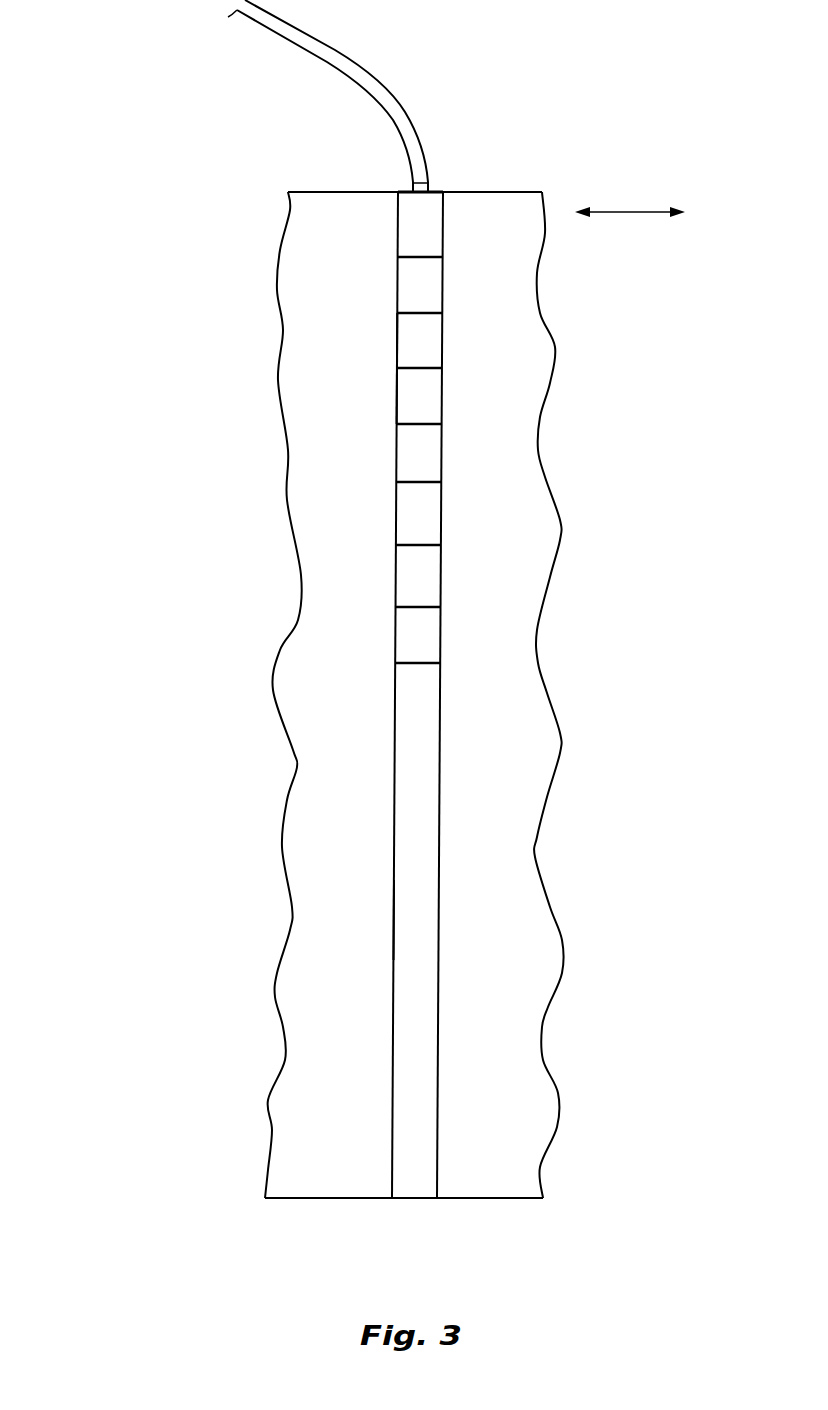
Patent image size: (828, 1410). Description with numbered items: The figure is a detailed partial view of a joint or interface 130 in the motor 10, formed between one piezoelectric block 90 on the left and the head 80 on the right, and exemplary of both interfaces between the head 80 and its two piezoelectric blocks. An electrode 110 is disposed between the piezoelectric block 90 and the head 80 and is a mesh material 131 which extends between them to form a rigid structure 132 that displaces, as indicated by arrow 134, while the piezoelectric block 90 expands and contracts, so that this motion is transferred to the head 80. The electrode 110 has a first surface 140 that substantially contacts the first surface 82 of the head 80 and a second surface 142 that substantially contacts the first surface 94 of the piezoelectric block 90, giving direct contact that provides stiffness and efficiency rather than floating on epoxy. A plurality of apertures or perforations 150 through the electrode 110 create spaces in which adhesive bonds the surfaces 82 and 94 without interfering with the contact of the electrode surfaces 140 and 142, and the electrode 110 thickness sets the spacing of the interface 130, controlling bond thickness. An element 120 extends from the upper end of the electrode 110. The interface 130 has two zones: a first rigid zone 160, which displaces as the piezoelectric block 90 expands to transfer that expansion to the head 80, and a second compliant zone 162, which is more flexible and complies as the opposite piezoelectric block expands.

The downhole tool / logging device 10 is at (184, 427).
The head 80 is at (507, 358).
The first surface of the head 82 is at (440, 797).
The piezoelectric block 90 is at (315, 495).
The first surface of the piezoelectric block 94 is at (393, 718).
The electrode 110 is at (427, 255).
The cable / tube 120 is at (370, 80).
The joint or interface 130 is at (417, 685).
The mesh material 131 is at (413, 548).
The rigid structure 132 is at (413, 308).
The arrow 134 is at (643, 211).
The first surface of the electrode 140 is at (441, 428).
The second surface of the electrode 142 is at (395, 518).
The apertures or perforations 150 is at (407, 320).
The first rigid zone 160 is at (382, 406).
The second compliant zone 162 is at (384, 919).